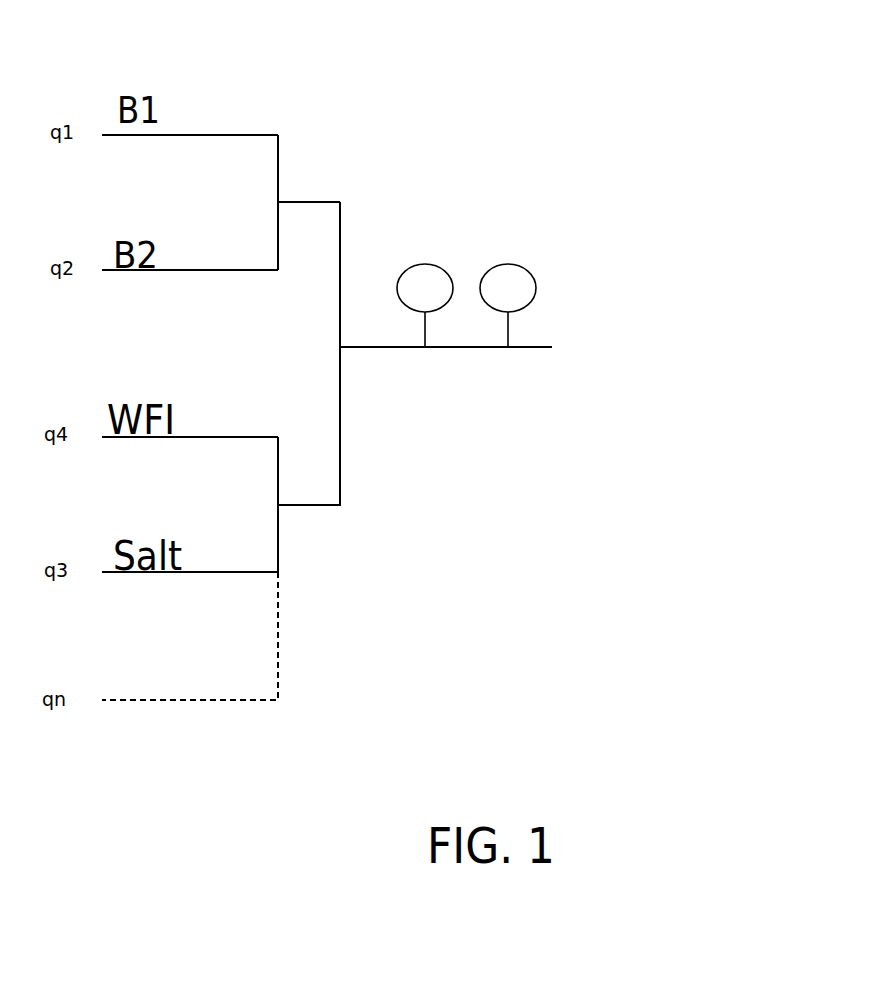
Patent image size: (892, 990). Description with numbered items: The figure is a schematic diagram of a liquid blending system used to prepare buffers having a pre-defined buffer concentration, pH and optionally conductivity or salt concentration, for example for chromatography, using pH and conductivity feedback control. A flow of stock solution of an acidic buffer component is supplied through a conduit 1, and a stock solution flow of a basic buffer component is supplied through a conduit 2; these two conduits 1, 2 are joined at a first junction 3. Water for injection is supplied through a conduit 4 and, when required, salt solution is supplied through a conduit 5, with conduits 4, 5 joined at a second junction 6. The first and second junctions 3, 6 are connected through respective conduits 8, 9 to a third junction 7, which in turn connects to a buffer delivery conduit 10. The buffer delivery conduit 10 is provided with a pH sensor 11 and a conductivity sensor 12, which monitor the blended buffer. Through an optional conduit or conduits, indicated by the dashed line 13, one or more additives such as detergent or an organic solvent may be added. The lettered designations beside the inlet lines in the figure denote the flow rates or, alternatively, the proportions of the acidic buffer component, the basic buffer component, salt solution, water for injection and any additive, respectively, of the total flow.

The conduit 1 is at (200, 130).
The conduit 2 is at (195, 265).
The first junction 3 is at (280, 198).
The conduit 4 is at (202, 433).
The conduit 5 is at (202, 570).
The second junction 6 is at (278, 512).
The third junction 7 is at (343, 350).
The conduit 8 is at (343, 275).
The conduit 9 is at (340, 472).
The buffer delivery conduit 10 is at (460, 347).
The pH sensor 11 is at (433, 257).
The conductivity sensor 12 is at (533, 268).
The optional conduit 13 is at (162, 697).